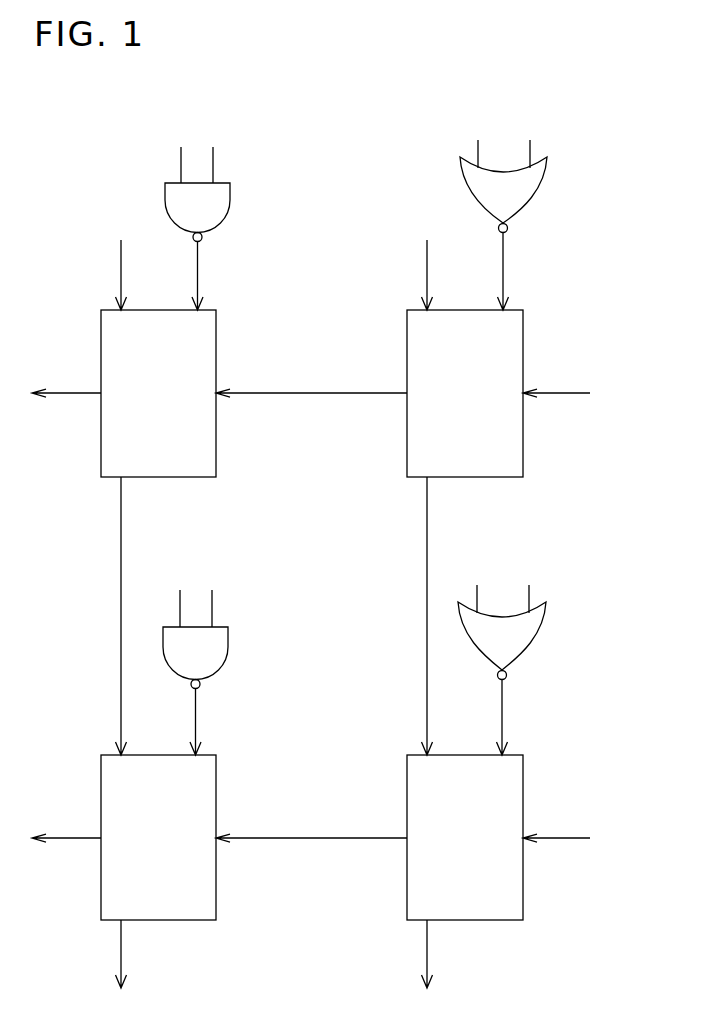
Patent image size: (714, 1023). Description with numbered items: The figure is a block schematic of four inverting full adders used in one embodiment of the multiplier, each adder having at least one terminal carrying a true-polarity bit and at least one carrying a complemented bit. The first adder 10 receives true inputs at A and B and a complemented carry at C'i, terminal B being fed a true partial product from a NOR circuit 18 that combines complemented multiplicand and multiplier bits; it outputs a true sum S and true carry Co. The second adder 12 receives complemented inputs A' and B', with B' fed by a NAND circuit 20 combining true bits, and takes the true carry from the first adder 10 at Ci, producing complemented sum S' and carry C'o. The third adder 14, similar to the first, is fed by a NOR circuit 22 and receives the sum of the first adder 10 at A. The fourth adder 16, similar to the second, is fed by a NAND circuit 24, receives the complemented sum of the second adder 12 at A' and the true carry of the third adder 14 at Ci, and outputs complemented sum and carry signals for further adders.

The first inverting full adder 10 is at (486, 437).
The second inverting full adder 12 is at (188, 443).
The third inverting full adder 14 is at (447, 889).
The fourth inverting full adder 16 is at (188, 874).
The NOR circuit 18 is at (512, 190).
The NAND circuit 20 is at (213, 207).
The NOR circuit 22 is at (520, 630).
The NAND circuit 24 is at (202, 652).